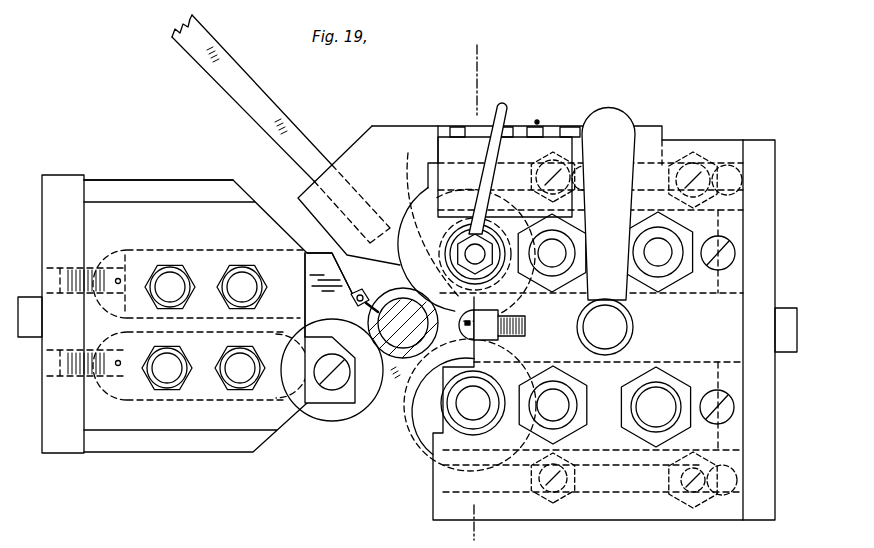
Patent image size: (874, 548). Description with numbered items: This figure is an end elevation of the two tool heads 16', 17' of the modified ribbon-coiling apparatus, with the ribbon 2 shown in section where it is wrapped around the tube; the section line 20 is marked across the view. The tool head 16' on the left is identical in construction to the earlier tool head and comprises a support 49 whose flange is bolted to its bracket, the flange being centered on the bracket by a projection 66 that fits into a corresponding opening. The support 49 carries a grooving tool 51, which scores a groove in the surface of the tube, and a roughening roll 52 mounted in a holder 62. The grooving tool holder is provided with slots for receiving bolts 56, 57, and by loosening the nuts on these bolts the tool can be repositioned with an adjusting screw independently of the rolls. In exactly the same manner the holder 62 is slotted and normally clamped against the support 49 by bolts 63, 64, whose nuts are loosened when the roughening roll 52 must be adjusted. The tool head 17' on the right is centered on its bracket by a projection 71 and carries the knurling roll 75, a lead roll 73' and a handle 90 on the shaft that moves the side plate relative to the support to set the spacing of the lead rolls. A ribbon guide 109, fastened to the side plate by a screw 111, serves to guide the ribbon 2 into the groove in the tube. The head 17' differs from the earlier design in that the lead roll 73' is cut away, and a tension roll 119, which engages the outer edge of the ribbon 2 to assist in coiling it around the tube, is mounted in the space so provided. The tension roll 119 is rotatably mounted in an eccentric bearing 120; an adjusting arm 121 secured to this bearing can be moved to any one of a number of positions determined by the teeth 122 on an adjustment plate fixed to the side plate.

The ribbon 2 is at (293, 115).
The tool head 16' is at (197, 292).
The tool head 17' is at (536, 295).
The section line 20 is at (472, 76).
The support 49 is at (195, 190).
The grooving tool 51 is at (313, 256).
The roughening roll 52 is at (350, 418).
The bolt 56 is at (243, 279).
The bolt 57 is at (171, 278).
The holder 62 is at (326, 403).
The bolt 63 is at (166, 378).
The bolt 64 is at (242, 378).
The projection 66 is at (30, 338).
The projection 71 is at (781, 307).
The lead roll 73' is at (457, 250).
The knurling roll 75 is at (428, 447).
The handle 90 is at (606, 106).
The ribbon guide 109 is at (503, 317).
The screw 111 is at (526, 333).
The tension roll 119 is at (423, 219).
The eccentric bearing 120 is at (548, 137).
The adjusting arm 121 is at (509, 110).
The teeth 122 is at (527, 125).